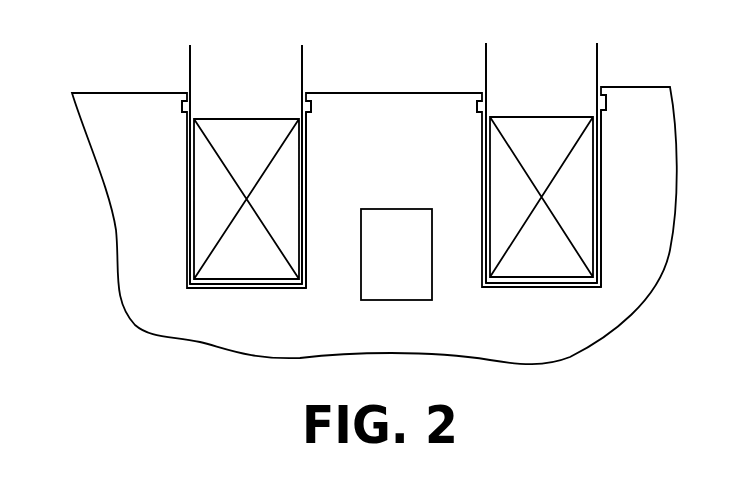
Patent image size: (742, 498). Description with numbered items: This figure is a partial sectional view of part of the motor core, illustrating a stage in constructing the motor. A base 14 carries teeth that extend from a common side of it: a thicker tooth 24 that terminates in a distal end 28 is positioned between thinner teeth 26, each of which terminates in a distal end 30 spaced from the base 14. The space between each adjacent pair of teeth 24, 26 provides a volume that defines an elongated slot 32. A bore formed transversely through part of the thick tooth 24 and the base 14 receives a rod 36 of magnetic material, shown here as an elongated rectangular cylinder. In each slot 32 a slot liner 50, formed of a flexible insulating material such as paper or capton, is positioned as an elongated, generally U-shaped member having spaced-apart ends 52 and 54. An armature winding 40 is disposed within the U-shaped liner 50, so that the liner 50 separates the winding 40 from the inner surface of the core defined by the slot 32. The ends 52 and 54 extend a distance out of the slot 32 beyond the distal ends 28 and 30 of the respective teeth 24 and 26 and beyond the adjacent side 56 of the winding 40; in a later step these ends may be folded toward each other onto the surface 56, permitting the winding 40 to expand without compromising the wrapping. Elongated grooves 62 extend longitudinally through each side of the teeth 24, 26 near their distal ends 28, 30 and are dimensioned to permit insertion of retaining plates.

The base 14 is at (220, 332).
The thick tooth 24 is at (413, 163).
The thin tooth 26 is at (154, 166).
The distal end of thick tooth 28 is at (370, 92).
The distal end of thin tooth 30 is at (128, 92).
The slot 32 is at (307, 180).
The rod 36 is at (413, 263).
The armature winding 40 is at (257, 261).
The slot liner 50 is at (200, 76).
The first end of slot liner 52 is at (191, 62).
The second end of slot liner 54 is at (303, 62).
The side of winding 56 is at (240, 119).
The groove 62 is at (181, 109).